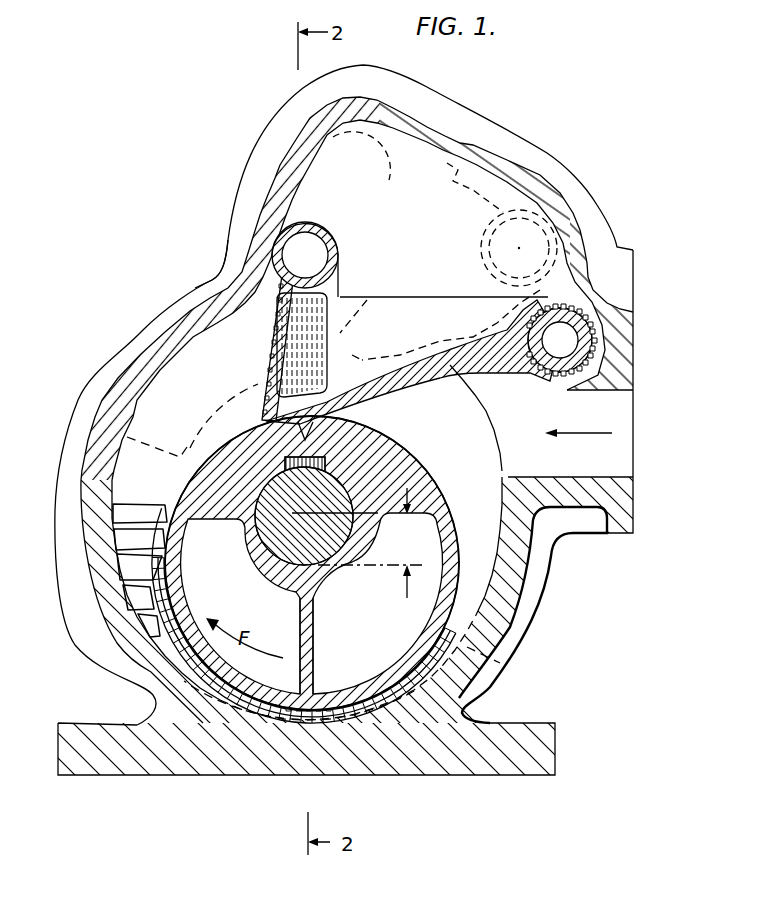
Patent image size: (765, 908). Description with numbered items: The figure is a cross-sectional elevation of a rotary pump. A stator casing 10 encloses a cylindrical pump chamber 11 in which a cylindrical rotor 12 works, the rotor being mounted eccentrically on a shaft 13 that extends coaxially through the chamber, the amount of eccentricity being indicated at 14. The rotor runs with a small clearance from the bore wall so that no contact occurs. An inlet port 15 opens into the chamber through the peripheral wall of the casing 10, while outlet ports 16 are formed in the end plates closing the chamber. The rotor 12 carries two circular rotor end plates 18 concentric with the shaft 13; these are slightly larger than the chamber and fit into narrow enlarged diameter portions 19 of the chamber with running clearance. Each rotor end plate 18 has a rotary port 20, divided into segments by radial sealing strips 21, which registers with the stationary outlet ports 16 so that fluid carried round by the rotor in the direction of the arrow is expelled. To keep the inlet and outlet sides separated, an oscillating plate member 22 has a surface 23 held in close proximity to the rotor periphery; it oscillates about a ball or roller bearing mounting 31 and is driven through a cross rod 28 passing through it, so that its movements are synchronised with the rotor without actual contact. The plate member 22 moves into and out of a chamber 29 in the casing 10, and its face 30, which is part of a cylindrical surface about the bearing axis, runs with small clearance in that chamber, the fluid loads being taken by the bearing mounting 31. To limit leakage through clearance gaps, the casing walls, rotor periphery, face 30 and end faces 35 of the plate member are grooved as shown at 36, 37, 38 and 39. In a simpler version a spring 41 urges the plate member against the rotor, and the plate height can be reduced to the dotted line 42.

The stator casing 10 is at (503, 617).
The pump chamber 11 is at (477, 575).
The rotor 12 is at (360, 467).
The shaft 13 is at (295, 538).
The eccentricity 14 is at (357, 543).
The inlet port 15 is at (600, 428).
The outlet ports 16 is at (307, 542).
The rotor end plates 18 is at (130, 483).
The enlarged diameter portions 19 is at (483, 657).
The rotary port 20 is at (133, 567).
The radial sealing strips 21 is at (150, 627).
The plate member 22 is at (467, 360).
The surface 23 is at (310, 418).
The cross rod 28 is at (301, 257).
The chamber 29 is at (404, 221).
The face 30 is at (253, 317).
The bearing mounting 31 is at (560, 340).
The end faces 35 is at (427, 313).
The grooves 36 is at (583, 370).
The grooves 37 is at (312, 698).
The grooves 38 is at (263, 376).
The grooves 39 is at (327, 343).
The spring 41 is at (483, 234).
The dotted line 42 is at (440, 319).